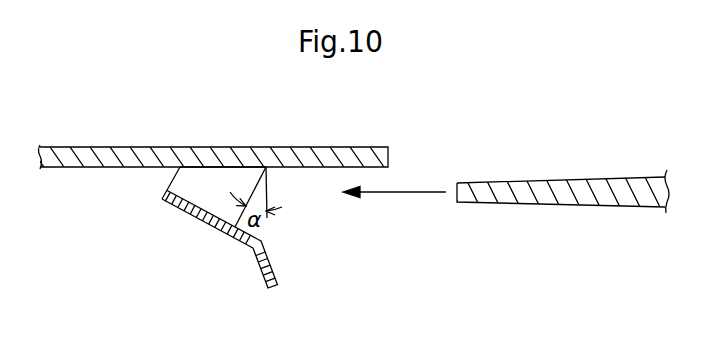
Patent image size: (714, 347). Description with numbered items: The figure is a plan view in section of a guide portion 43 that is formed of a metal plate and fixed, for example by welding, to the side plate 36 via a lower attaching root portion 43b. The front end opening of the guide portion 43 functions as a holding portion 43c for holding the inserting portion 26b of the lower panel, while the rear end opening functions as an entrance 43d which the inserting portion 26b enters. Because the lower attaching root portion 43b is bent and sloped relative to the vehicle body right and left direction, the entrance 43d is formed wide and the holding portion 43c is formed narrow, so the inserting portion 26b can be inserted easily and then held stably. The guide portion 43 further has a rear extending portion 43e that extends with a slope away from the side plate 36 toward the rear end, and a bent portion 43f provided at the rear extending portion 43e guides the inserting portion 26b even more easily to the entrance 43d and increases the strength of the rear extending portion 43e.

The side plate 36 is at (95, 168).
The guide portion 43 is at (222, 220).
The lower attaching root portion 43b is at (216, 180).
The holding portion 43c is at (167, 178).
The entrance 43d is at (274, 191).
The rear extending portion 43e is at (249, 259).
The bent portion 43f is at (257, 246).
The inserting portion 26b is at (543, 203).